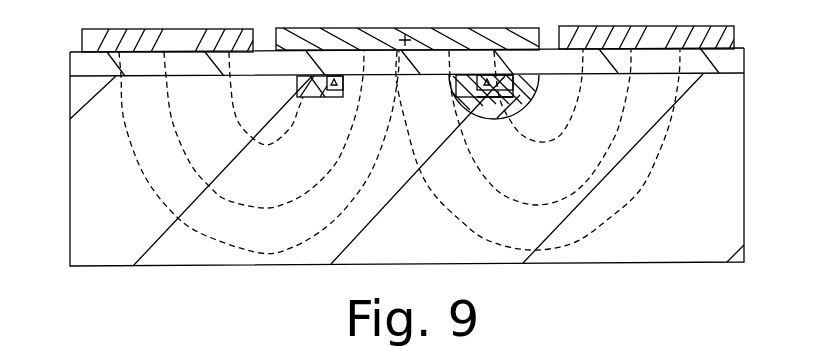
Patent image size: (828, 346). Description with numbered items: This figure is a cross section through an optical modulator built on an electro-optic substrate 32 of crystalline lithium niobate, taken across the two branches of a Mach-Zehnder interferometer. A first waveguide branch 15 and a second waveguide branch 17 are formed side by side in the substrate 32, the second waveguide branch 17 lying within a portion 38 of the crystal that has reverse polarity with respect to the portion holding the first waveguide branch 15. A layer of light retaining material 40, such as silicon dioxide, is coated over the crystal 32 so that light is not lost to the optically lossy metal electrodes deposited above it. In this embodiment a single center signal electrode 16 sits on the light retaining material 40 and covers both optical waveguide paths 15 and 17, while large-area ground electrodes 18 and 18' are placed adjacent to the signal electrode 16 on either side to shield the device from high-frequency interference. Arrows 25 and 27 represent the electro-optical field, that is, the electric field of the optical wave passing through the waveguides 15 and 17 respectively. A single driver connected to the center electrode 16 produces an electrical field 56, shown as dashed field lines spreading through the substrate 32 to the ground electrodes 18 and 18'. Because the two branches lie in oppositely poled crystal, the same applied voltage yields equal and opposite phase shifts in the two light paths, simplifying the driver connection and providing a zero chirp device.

The ground electrode 18 is at (170, 27).
The center signal electrode 16 is at (427, 28).
The ground electrode 18' is at (650, 26).
The light retaining material layer 40 is at (70, 68).
The first waveguide branch 15 is at (318, 97).
The electro-optical field arrow 25 is at (343, 88).
The electro-optical field arrow 27 is at (457, 96).
The second waveguide branch 17 is at (507, 101).
The reverse polarity portion 38 is at (497, 118).
The electrical field 56 is at (289, 206).
The electro-optic substrate 32 is at (126, 221).